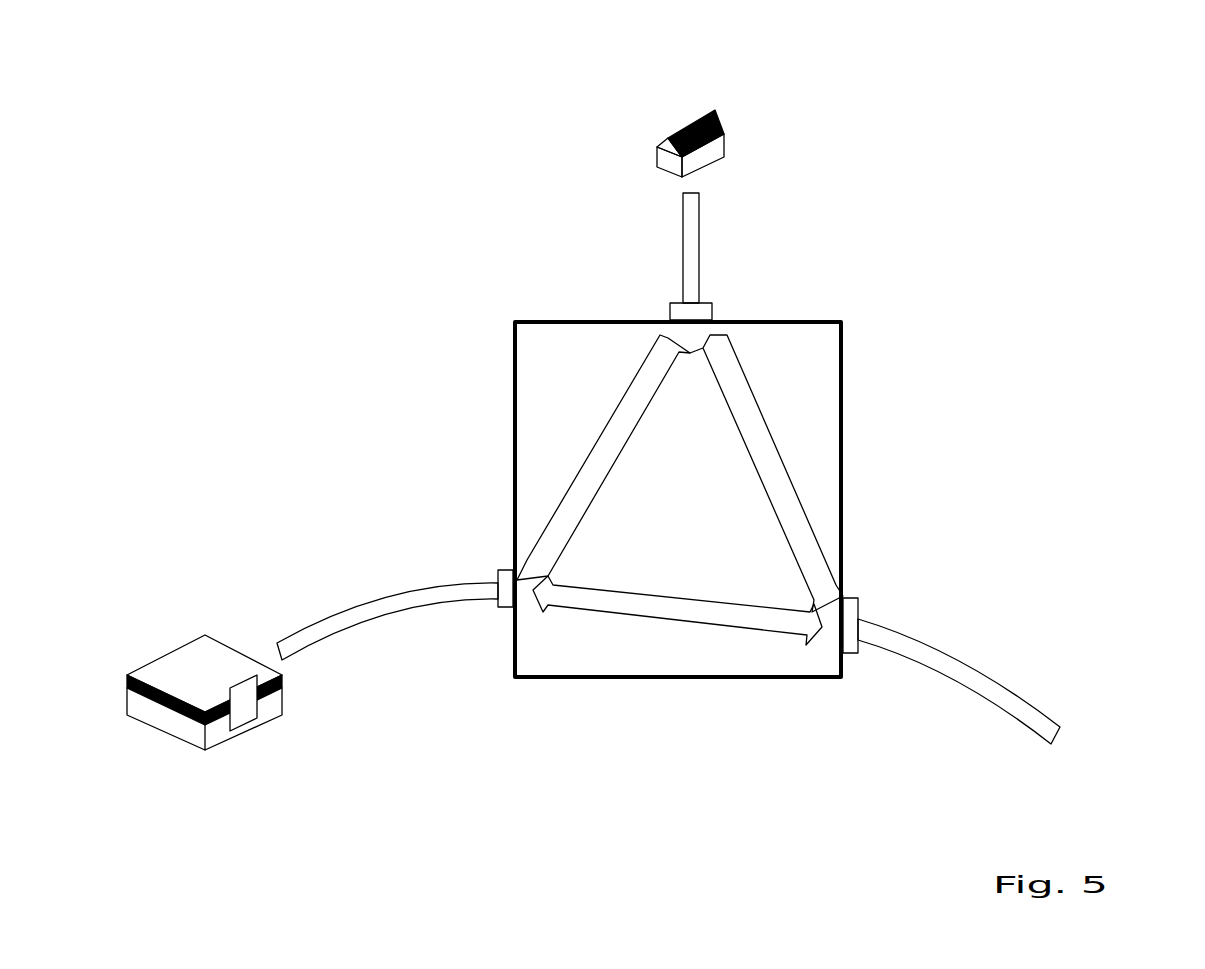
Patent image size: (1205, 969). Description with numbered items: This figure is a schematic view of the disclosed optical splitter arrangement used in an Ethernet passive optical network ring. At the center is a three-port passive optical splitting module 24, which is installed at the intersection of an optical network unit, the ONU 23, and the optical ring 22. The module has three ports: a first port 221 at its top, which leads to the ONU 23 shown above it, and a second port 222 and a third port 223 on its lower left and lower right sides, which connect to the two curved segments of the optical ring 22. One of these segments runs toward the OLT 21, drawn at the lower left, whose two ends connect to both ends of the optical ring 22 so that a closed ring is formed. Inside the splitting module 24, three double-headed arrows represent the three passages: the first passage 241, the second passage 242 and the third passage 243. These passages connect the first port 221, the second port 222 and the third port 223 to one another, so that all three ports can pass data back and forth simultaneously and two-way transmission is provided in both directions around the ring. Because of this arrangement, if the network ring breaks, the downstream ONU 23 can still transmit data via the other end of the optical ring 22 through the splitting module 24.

The OLT 21 is at (210, 750).
The optical ring 22 is at (1013, 692).
The optical network unit (ONU) 23 is at (725, 130).
The three-port passive optical splitting module 24 is at (845, 367).
The first port 221 is at (712, 298).
The second port 222 is at (498, 565).
The third port 223 is at (858, 598).
The first passage 241 is at (790, 490).
The second passage 242 is at (590, 455).
The third passage 243 is at (678, 612).